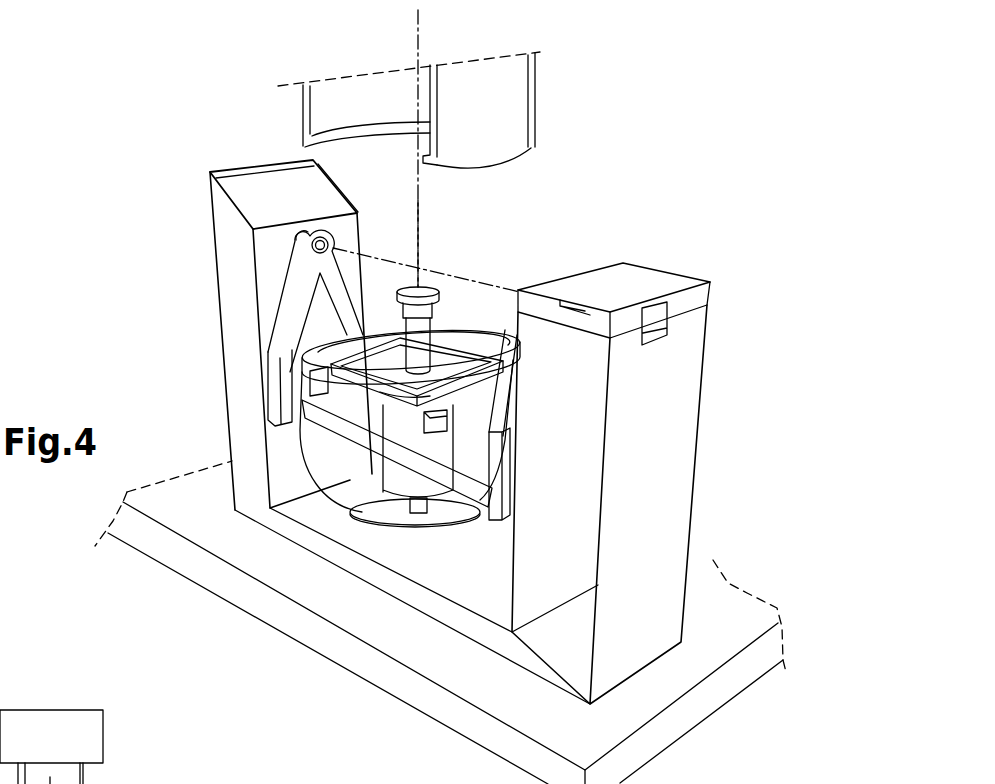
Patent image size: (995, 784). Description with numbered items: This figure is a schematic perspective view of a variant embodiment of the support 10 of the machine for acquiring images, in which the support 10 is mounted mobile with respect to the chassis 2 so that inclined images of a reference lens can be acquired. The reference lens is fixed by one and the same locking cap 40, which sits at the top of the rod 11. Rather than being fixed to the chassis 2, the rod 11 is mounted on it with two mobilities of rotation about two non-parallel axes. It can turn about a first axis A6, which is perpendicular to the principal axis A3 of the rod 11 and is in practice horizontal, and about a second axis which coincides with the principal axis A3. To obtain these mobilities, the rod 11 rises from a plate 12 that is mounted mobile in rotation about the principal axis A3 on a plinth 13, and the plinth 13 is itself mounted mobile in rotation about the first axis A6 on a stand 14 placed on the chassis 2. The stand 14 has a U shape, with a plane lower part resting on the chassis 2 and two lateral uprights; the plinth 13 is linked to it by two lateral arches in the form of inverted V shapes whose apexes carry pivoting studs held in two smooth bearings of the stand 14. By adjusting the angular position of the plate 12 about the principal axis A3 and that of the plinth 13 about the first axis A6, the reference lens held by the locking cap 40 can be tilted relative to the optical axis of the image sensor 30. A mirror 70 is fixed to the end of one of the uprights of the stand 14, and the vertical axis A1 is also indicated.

The chassis 2 is at (441, 706).
The support 10 is at (411, 407).
The rod 11 is at (423, 333).
The plate 12 is at (495, 342).
The plinth 13 is at (460, 510).
The stand 14 is at (233, 433).
The image sensor 30 is at (535, 119).
The locking cap 40 is at (430, 283).
The mirror 70 is at (250, 183).
The vertical axis A1 is at (418, 47).
The principal axis A3 is at (420, 255).
The first axis A6 is at (400, 258).